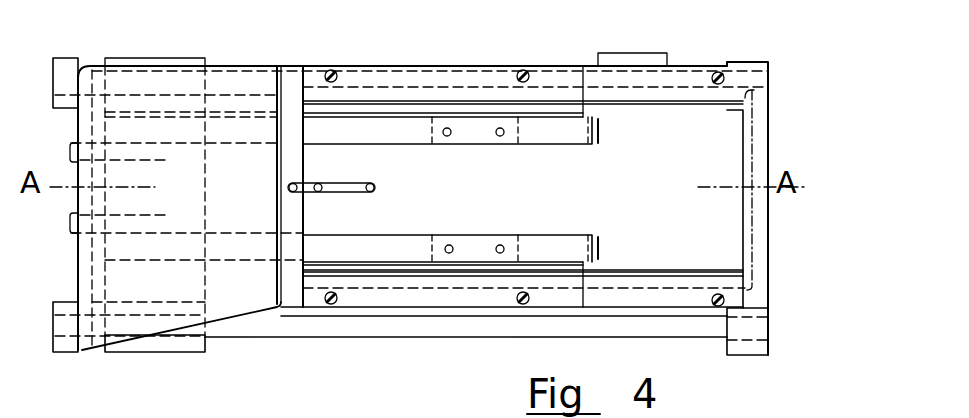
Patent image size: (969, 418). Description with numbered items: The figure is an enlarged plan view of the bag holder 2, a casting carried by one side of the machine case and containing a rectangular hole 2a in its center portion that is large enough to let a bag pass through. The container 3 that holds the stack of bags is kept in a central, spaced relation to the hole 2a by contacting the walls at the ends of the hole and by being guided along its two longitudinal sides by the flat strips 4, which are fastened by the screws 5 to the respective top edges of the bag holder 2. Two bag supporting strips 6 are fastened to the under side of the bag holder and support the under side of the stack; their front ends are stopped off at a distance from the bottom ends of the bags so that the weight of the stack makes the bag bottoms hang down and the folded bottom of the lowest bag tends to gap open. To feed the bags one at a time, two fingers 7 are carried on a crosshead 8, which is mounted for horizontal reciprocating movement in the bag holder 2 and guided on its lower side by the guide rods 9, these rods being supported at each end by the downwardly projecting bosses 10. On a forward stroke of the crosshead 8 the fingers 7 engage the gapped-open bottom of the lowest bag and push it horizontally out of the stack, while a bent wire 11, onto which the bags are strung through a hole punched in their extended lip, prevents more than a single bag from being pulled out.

The bag holder 2 is at (262, 66).
The rectangular hole 2a is at (523, 189).
The container 3 is at (655, 274).
The flat strips 4 is at (524, 190).
The screws 5 is at (527, 72).
The bag supporting strips 6 is at (560, 110).
The fingers 7 is at (452, 143).
The crosshead 8 is at (196, 205).
The guide rods 9 is at (466, 330).
The bosses 10 is at (62, 348).
The bent wire 11 is at (335, 182).